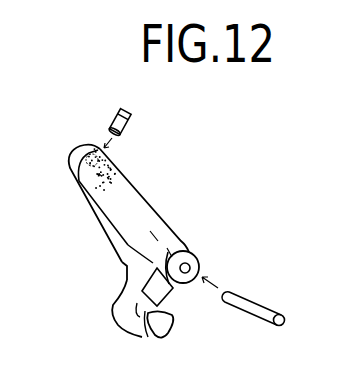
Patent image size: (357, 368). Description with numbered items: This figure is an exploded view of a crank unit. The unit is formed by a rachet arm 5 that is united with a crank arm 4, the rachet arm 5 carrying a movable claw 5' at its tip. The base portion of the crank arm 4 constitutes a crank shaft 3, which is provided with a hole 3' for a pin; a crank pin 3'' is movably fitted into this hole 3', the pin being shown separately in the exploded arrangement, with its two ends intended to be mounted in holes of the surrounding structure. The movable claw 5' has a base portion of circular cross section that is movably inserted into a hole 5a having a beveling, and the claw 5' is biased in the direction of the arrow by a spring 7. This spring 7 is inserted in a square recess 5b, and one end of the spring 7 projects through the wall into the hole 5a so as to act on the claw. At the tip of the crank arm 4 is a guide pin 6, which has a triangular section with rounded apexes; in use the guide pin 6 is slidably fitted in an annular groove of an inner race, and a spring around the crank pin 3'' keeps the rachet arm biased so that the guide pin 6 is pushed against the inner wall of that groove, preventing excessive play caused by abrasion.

The crank shaft 3 is at (199, 251).
The hole 3' is at (216, 265).
The crank pin 3'' is at (273, 301).
The crank arm 4 is at (131, 285).
The rachet arm 5 is at (156, 214).
The hole 5a is at (77, 183).
The square recess 5b is at (90, 193).
The movable claw 5' is at (158, 126).
The guide pin 6 is at (160, 330).
The spring 7 is at (105, 150).